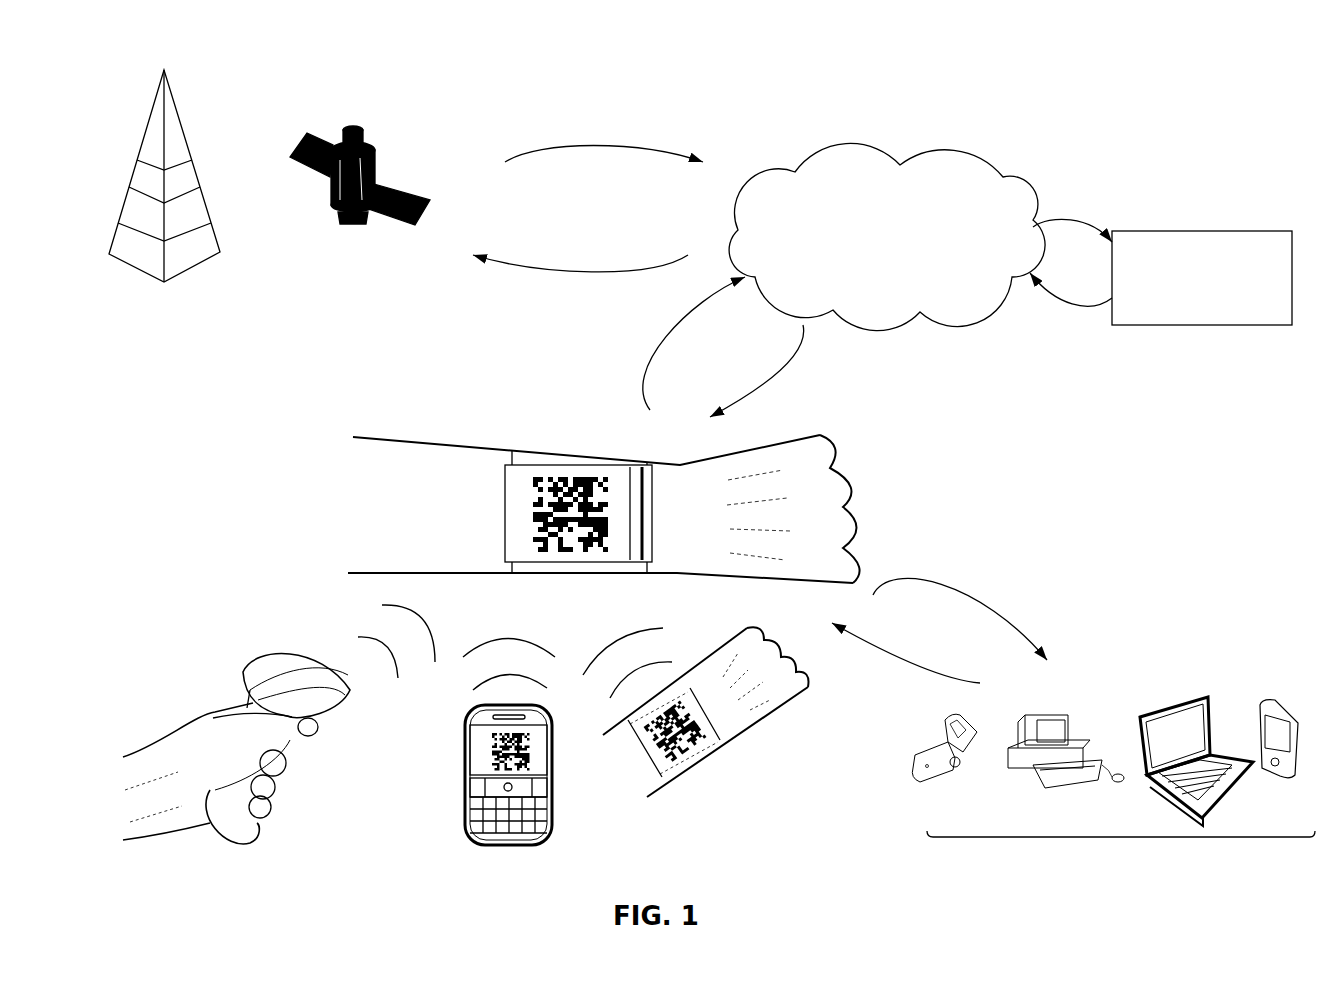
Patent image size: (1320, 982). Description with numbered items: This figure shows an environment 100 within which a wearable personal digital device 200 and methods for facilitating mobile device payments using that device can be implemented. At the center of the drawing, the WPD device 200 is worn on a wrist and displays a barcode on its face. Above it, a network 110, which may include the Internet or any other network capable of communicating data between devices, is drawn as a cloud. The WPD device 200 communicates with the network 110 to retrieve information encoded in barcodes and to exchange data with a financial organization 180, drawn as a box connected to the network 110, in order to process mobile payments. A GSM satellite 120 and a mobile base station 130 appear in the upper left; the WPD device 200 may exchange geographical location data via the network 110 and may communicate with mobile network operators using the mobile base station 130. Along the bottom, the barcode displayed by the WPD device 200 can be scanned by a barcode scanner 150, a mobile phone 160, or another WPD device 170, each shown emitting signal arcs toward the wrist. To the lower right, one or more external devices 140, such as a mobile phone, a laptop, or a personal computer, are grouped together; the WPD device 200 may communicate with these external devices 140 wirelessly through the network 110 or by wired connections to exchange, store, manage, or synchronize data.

The environment 100 is at (1240, 124).
The network 110 is at (1005, 173).
The GSM satellite 120 is at (420, 190).
The mobile base station 130 is at (193, 150).
The external devices 140 is at (1118, 837).
The barcode scanner 150 is at (220, 853).
The mobile phone 160 is at (505, 843).
The another WPD device 170 is at (650, 800).
The financial organization 180 is at (1202, 231).
The wearable personal digital device 200 is at (578, 465).